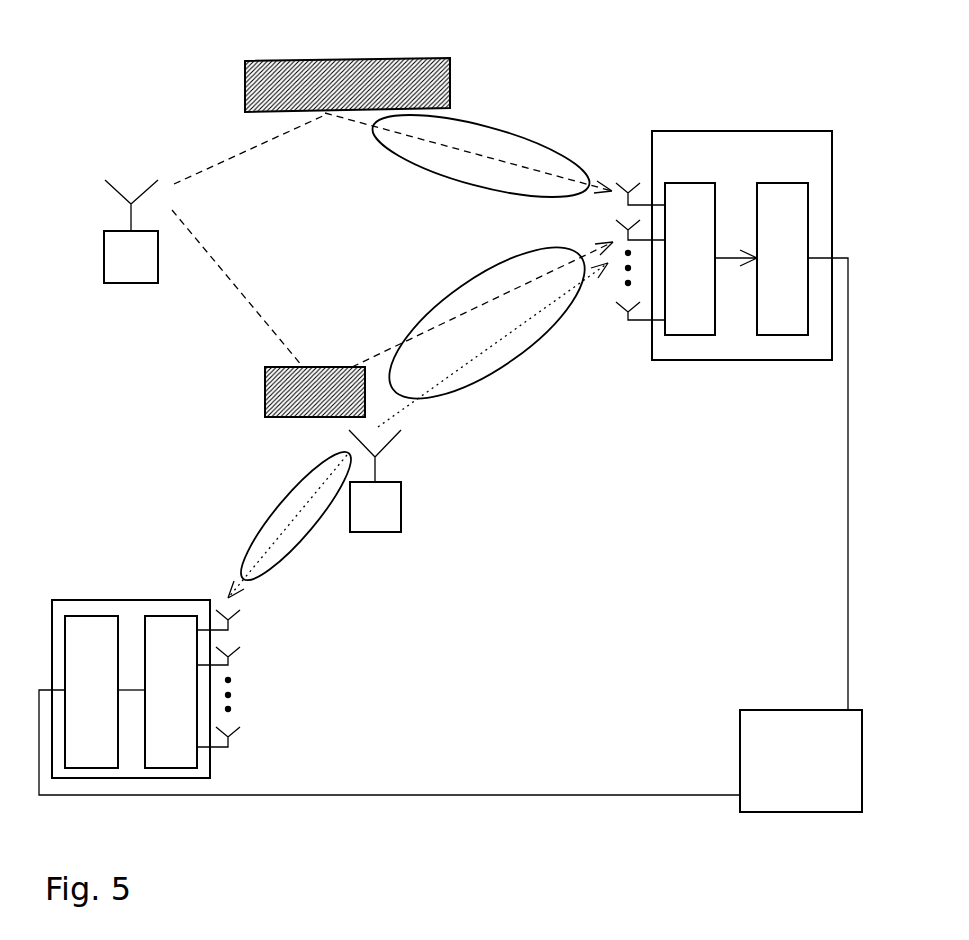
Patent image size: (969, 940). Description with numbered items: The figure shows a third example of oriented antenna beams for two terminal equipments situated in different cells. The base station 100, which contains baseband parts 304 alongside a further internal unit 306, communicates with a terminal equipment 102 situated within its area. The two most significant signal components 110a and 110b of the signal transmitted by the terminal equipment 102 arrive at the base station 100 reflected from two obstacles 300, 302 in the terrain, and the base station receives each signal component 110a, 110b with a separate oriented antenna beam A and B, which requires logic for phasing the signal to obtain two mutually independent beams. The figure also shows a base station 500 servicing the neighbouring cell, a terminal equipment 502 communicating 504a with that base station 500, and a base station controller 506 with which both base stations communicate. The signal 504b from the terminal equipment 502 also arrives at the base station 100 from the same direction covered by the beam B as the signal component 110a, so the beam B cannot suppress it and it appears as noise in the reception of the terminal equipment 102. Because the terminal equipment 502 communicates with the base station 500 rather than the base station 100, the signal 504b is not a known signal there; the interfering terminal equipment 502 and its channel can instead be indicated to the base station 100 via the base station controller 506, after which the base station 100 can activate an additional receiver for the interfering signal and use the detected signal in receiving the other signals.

The base station 100 is at (724, 265).
The terminal equipment 102 is at (100, 272).
The signal component 110a is at (238, 283).
The signal component 110b is at (217, 163).
The obstacle 300 is at (372, 60).
The obstacle 302 is at (265, 403).
The baseband parts 304 is at (672, 183).
The baseband unit of base station 100 306 is at (765, 183).
The base station 500 is at (95, 600).
The terminal equipment 502 is at (401, 513).
The communication 504a is at (292, 547).
The signal 504b is at (410, 403).
The base station controller 506 is at (797, 710).
The oriented antenna beam A is at (515, 140).
The oriented antenna beam B is at (518, 357).